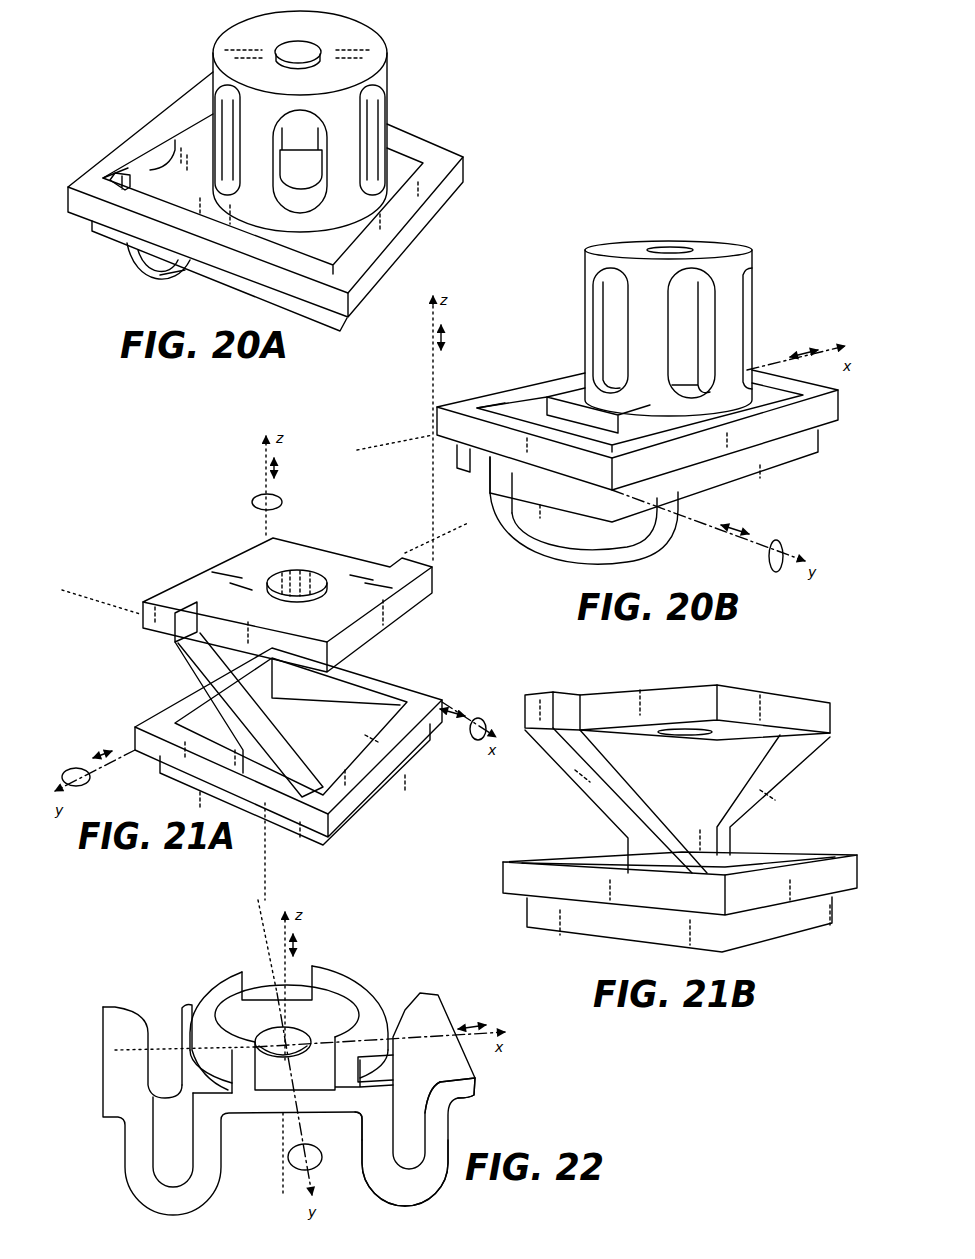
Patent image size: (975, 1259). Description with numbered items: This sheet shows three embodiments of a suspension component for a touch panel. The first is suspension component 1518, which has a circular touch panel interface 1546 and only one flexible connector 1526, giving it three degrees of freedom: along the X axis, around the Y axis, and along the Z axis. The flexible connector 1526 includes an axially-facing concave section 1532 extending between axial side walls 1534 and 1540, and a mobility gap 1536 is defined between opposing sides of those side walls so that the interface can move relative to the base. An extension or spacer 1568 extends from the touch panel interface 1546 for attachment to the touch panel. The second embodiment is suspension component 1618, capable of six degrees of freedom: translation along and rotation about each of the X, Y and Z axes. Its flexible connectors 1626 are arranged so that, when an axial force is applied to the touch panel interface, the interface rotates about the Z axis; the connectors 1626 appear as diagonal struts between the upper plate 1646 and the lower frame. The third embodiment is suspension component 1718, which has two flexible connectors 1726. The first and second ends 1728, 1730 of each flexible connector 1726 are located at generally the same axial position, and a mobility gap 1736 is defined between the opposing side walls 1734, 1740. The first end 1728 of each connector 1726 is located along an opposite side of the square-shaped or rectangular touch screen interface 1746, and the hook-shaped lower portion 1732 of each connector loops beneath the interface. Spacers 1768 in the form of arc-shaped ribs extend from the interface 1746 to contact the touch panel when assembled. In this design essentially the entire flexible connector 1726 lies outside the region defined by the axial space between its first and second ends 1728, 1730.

In FIG. 20A, the suspension component 1518 is at (418, 98).
In FIG. 20B, the suspension component 1518 is at (776, 256).
In FIG. 20A, the flexible connector 1526 is at (155, 273).
In FIG. 20B, the flexible connector 1526 is at (567, 523).
In FIG. 20A, the axially-facing concave section 1532 is at (177, 278).
In FIG. 20B, the axial side wall 1534 is at (593, 417).
In FIG. 20A, the mobility gap 1536 is at (207, 134).
In FIG. 20B, the mobility gap 1536 is at (540, 404).
In FIG. 20A, the axial side wall 1540 is at (180, 140).
In FIG. 20B, the axial side wall 1540 is at (513, 473).
In FIG. 20A, the circular touch panel interface 1546 is at (207, 188).
In FIG. 20A, the extension or spacer 1568 is at (372, 46).
In FIG. 20B, the extension or spacer 1568 is at (590, 243).
In FIG. 21A, the suspension component 1618 is at (316, 500).
In FIG. 21B, the suspension component 1618 is at (755, 672).
In FIG. 21A, the flexible connectors 1626 is at (168, 673).
In FIG. 21B, the flexible connectors 1626 is at (773, 780).
In FIG. 21A, the top plate 1646 is at (343, 565).
In FIG. 22, the suspension component 1718 is at (468, 1000).
In FIG. 22, the flexible connector 1726 is at (395, 1000).
In FIG. 22, the first end 1728 is at (380, 1098).
In FIG. 22, the second end 1730 is at (465, 1089).
In FIG. 22, the hook bottom 1732 is at (422, 1178).
In FIG. 22, the side wall 1734 is at (367, 1157).
In FIG. 22, the mobility gap 1736 is at (165, 1021).
In FIG. 22, the side wall 1740 is at (442, 1118).
In FIG. 22, the touch screen interface 1746 is at (300, 1010).
In FIG. 22, the spacers 1768 is at (362, 985).